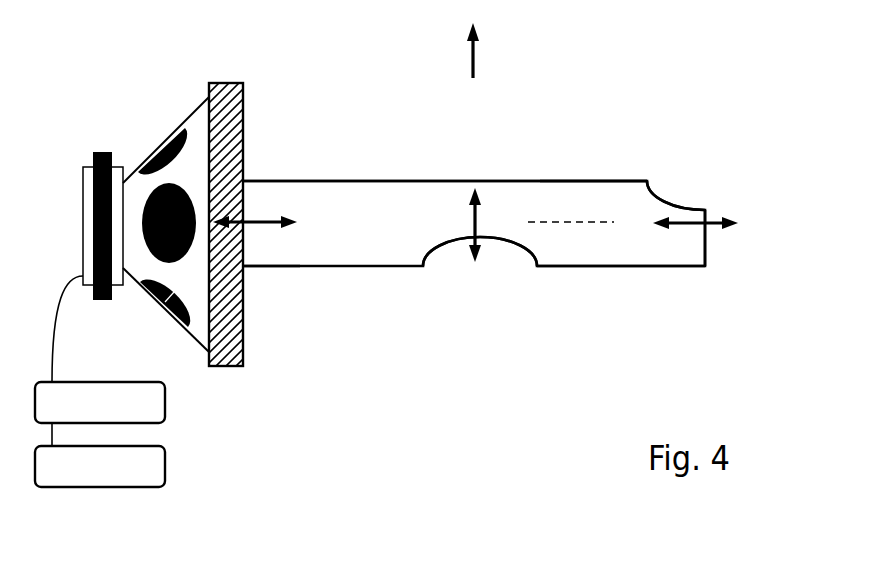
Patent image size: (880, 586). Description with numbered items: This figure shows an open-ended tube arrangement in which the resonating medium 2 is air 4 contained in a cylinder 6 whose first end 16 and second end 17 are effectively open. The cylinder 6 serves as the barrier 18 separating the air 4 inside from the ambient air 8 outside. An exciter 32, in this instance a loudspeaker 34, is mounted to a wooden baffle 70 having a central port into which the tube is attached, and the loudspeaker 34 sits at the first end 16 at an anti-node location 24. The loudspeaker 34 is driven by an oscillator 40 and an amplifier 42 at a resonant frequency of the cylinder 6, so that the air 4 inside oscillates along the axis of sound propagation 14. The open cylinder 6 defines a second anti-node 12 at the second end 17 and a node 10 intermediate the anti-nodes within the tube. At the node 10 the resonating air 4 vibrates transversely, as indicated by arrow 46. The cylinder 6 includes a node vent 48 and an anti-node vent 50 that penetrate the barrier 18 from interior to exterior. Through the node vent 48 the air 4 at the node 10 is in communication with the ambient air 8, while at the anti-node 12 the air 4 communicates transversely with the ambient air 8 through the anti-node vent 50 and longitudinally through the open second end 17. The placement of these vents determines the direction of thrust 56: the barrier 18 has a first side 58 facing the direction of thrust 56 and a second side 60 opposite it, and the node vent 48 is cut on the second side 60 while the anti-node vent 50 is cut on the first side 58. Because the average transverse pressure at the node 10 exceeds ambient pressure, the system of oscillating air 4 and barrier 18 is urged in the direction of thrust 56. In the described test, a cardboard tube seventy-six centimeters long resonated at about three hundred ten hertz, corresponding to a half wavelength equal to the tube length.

The resonating medium 2 is at (474, 199).
The air 4 is at (343, 205).
The cylinder 6 is at (445, 143).
The ambient air 8 is at (354, 320).
The node 10 is at (508, 195).
The anti-node 12 is at (475, 205).
The axis of sound propagation 14 is at (572, 222).
The first end 16 is at (243, 268).
The second end 17 is at (707, 233).
The barrier 18 is at (425, 180).
The anti-node location 24 is at (250, 215).
The exciter 32 is at (102, 152).
The loudspeaker 34 is at (193, 338).
The oscillator 40 is at (100, 455).
The amplifier 42 is at (100, 349).
The arrow indicating transverse vibration 46 is at (478, 212).
The node vent 48 is at (440, 253).
The anti-node vent 50 is at (673, 198).
The direction of thrust 56 is at (473, 52).
The first side 58 is at (595, 180).
The second side 60 is at (593, 267).
The baffle 70 is at (224, 88).